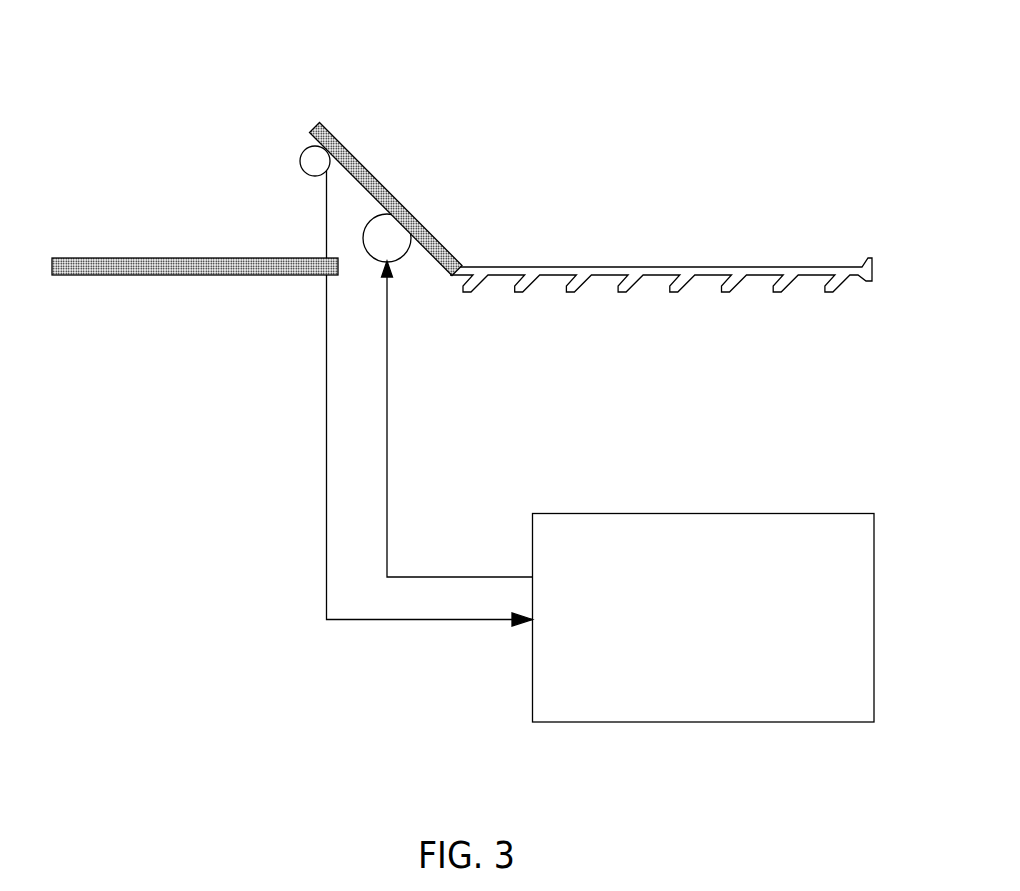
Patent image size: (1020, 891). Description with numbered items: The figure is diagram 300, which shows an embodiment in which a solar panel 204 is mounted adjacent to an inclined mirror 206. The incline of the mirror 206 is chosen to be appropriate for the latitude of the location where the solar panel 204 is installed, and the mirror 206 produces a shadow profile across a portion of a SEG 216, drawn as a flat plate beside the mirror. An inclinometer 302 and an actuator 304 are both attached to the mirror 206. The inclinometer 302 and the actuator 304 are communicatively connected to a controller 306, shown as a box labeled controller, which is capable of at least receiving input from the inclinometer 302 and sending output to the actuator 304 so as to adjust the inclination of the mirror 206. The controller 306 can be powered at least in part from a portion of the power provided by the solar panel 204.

The diagram 300 is at (717, 53).
The solar panel 204 is at (821, 266).
The inclined mirror 206 is at (356, 142).
The SEG 216 is at (72, 258).
The inclinometer 302 is at (304, 172).
The actuator 304 is at (408, 250).
The controller 306 is at (702, 513).